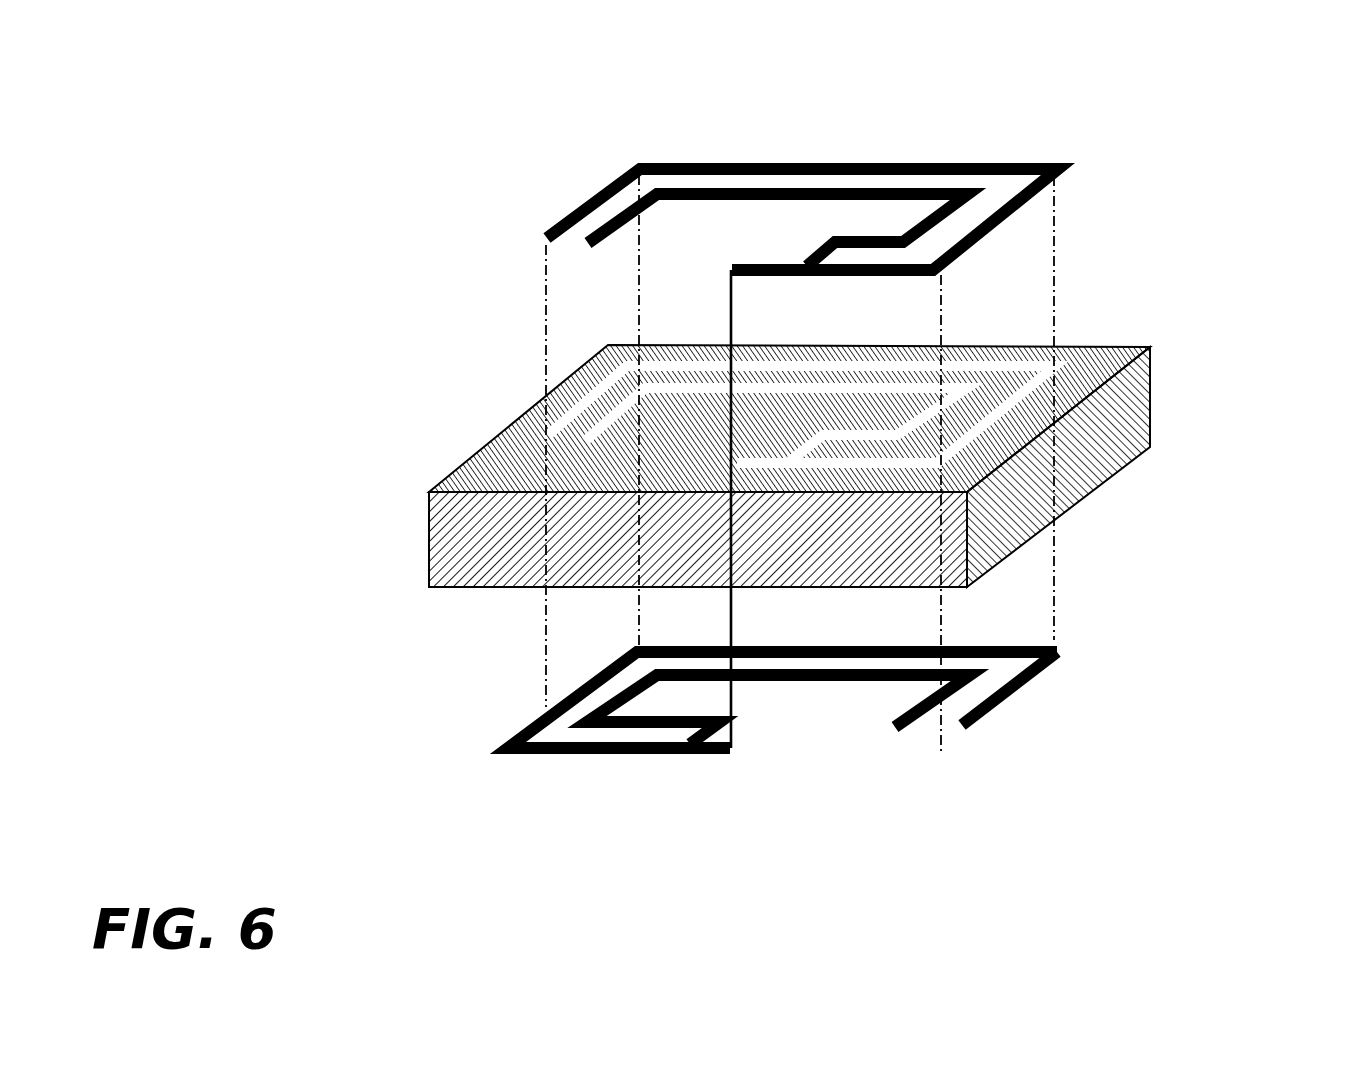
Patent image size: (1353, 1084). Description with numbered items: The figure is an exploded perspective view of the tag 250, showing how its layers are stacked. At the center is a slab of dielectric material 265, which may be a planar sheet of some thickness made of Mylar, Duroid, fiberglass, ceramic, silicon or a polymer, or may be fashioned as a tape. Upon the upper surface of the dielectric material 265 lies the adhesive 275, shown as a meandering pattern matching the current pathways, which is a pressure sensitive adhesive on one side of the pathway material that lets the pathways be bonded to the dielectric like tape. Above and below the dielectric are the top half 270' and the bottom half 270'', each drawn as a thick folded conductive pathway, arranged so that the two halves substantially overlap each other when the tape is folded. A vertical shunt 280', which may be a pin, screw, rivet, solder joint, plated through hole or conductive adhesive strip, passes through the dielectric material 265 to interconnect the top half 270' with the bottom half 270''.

The tag structure 250 is at (729, 441).
The dielectric material 265 is at (872, 439).
The adhesive 275 is at (1102, 348).
The top half 270' is at (889, 181).
The bottom half 270'' is at (843, 702).
The shunt 280' is at (802, 530).